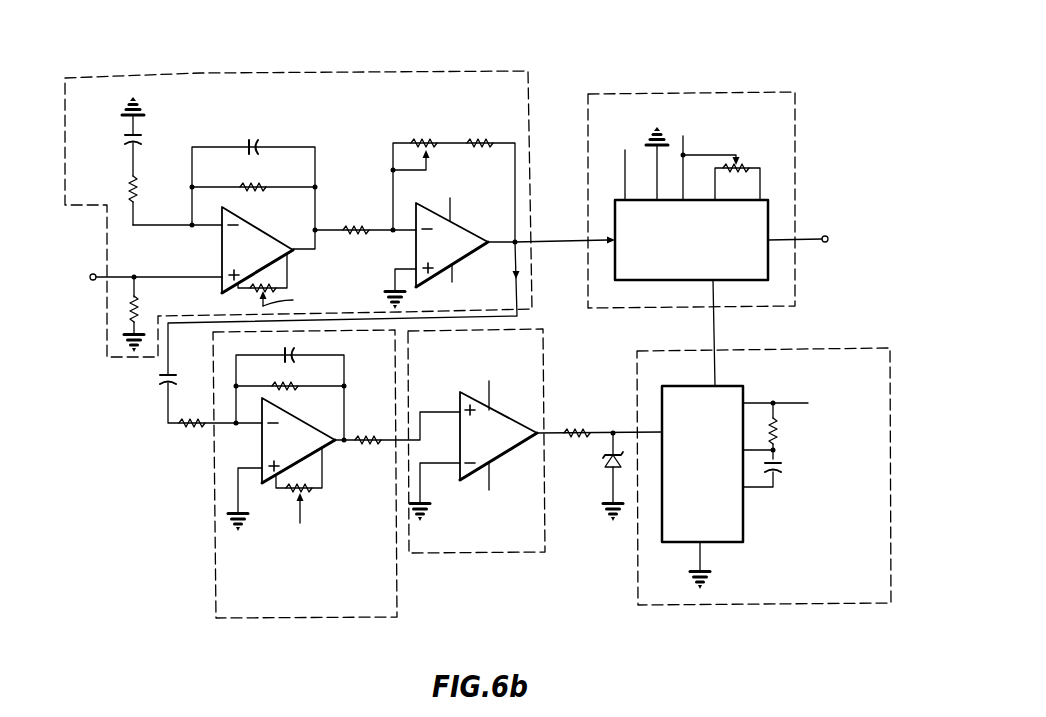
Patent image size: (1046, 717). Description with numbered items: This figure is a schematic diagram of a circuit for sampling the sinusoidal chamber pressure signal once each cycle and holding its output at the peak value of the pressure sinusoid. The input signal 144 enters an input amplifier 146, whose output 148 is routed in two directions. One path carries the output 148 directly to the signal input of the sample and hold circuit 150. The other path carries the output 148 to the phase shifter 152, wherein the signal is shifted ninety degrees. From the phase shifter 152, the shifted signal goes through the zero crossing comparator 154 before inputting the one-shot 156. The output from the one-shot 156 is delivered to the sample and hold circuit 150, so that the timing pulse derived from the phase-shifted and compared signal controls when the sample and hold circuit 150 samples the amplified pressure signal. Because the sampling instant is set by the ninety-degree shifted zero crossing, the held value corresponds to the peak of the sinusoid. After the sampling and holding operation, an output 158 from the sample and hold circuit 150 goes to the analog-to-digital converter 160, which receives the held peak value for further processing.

The input signal terminal 144 is at (116, 275).
The input amplifier 146 is at (197, 72).
The output 148 is at (568, 241).
The sample and hold circuit 150 is at (669, 88).
The phase shifter 152 is at (208, 510).
The zero crossing comparator 154 is at (555, 527).
The one-shot 156 is at (824, 342).
The output 158 is at (816, 233).
The analog-to-digital converter 160 is at (876, 252).